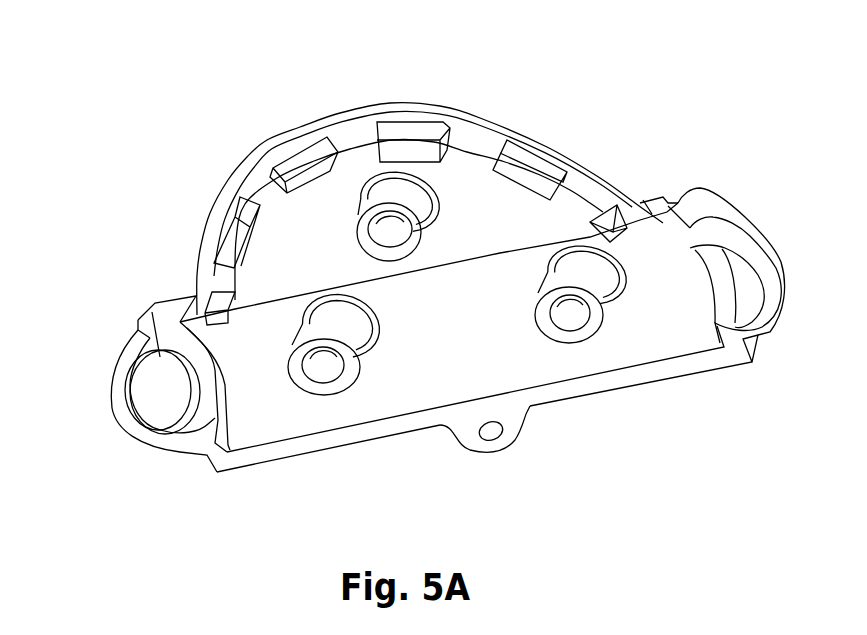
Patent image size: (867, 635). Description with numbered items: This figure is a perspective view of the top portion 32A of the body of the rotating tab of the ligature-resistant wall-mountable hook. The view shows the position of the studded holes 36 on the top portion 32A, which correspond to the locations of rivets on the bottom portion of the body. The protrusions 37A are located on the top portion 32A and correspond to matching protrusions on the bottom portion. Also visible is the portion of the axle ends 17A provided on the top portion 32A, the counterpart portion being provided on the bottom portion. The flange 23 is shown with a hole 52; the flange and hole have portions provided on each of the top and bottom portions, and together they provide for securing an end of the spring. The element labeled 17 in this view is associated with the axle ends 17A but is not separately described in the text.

The top portion 32A is at (652, 45).
The protrusions 37A is at (421, 130).
The base plate 17 is at (294, 448).
The axle ends 17A is at (723, 222).
The flange 23 is at (527, 412).
The hole 52 is at (488, 432).
The studded holes 36 is at (408, 240).